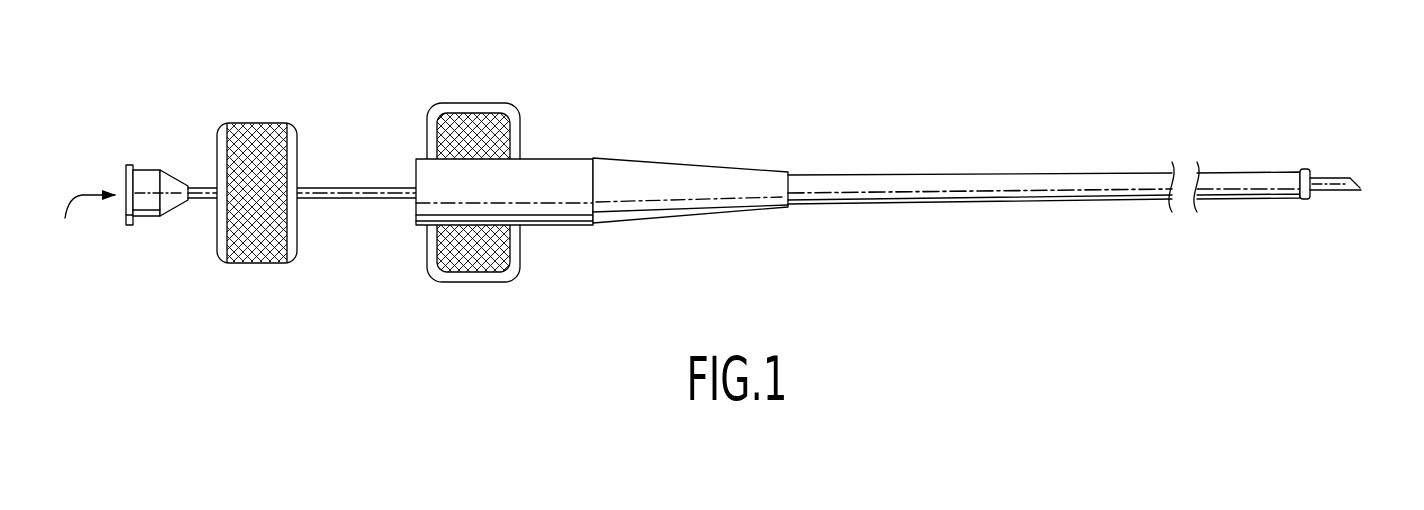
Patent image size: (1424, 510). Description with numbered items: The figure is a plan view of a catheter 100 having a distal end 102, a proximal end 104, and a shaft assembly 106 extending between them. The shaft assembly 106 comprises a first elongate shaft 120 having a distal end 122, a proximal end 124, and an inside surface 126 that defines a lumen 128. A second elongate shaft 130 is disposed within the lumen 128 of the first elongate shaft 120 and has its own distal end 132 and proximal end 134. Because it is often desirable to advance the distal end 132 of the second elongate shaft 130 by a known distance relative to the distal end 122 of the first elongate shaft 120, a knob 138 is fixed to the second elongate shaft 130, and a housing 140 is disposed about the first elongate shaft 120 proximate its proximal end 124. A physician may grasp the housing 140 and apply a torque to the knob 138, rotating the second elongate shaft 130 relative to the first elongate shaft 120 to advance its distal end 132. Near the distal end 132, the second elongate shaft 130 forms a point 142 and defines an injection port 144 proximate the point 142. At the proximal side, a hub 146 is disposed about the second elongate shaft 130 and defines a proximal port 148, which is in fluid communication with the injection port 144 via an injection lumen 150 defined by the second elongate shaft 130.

The catheter 100 is at (985, 322).
The distal end 102 is at (1263, 322).
The proximal end 104 is at (204, 367).
The shaft assembly 106 is at (980, 172).
The first elongate shaft 120 is at (873, 183).
The distal end 122 is at (1277, 100).
The proximal end 124 is at (618, 100).
The inside surface 126 is at (921, 199).
The lumen 128 is at (980, 191).
The second elongate shaft 130 is at (368, 187).
The distal end 132 is at (1330, 207).
The proximal end 134 is at (182, 252).
The knob 138 is at (255, 123).
The housing 140 is at (552, 175).
The point 142 is at (1360, 190).
The injection port 144 is at (1357, 178).
The hub 146 is at (145, 170).
The proximal port 148 is at (85, 226).
The injection lumen 150 is at (338, 198).